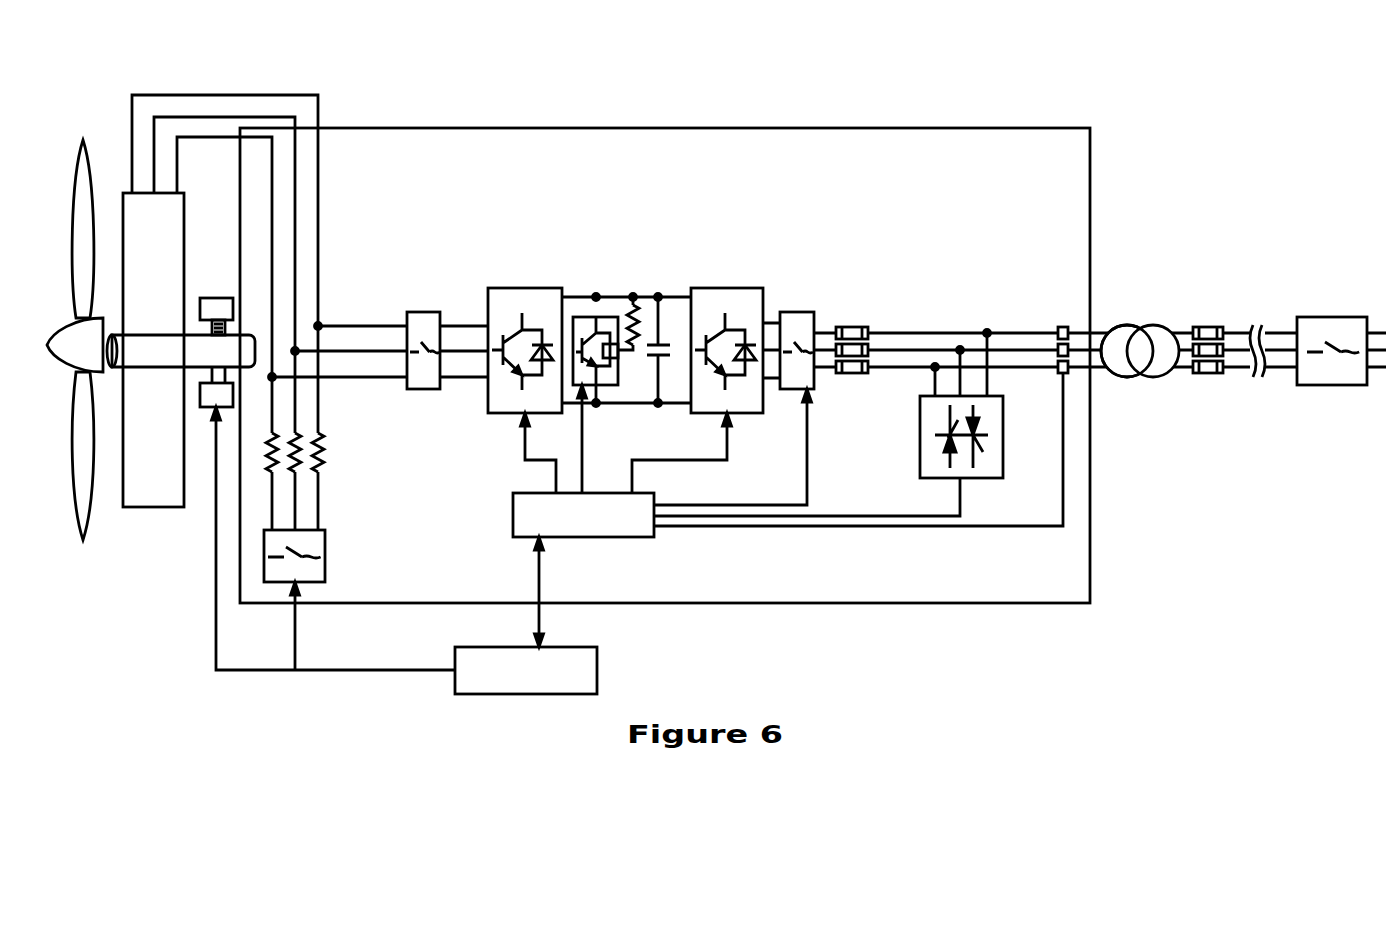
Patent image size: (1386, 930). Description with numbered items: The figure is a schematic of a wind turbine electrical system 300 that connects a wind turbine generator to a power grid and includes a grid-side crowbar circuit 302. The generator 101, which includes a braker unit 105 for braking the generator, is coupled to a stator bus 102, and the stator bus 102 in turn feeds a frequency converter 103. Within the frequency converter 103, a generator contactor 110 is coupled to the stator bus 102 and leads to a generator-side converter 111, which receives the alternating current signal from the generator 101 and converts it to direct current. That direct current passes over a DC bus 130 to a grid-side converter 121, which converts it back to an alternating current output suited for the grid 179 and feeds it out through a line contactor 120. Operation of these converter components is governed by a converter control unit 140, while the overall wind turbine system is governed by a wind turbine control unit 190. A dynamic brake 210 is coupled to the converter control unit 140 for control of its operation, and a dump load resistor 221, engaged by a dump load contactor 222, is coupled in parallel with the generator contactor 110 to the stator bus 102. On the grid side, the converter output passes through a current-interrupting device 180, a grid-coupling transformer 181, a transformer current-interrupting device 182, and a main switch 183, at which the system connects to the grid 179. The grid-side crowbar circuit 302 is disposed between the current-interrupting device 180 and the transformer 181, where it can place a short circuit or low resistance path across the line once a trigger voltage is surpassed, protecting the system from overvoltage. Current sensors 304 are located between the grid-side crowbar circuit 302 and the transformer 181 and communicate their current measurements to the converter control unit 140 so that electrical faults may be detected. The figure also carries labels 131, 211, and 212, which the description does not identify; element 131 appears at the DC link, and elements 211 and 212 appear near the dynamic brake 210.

The generator 101 is at (165, 507).
The stator bus 102 is at (287, 94).
The frequency converter 103 is at (705, 128).
The braker unit 105 is at (216, 245).
The generator contactor 110 is at (428, 312).
The generator-side converter 111 is at (525, 288).
The line contactor 120 is at (797, 312).
The grid-side converter 121 is at (727, 288).
The DC bus 130 is at (674, 297).
The DC intermediate circuit 131 is at (660, 378).
The converter control unit 140 is at (620, 537).
The grid 179 is at (1330, 317).
The current-interrupting device 180 is at (852, 327).
The grid-coupling transformer 181 is at (1125, 325).
The transformer current-interrupting device 182 is at (1208, 327).
The main switch 183 is at (1330, 385).
The wind turbine control unit 190 is at (575, 647).
The dynamic brake 210 is at (596, 297).
The chopper resistor 211 is at (633, 297).
The chopper circuit 212 is at (610, 329).
The dump load resistor 221 is at (337, 462).
The dump load contactor 222 is at (313, 583).
The wind turbine electrical system 300 is at (848, 100).
The grid-side crowbar circuit 302 is at (920, 445).
The current sensors 304 is at (1063, 327).